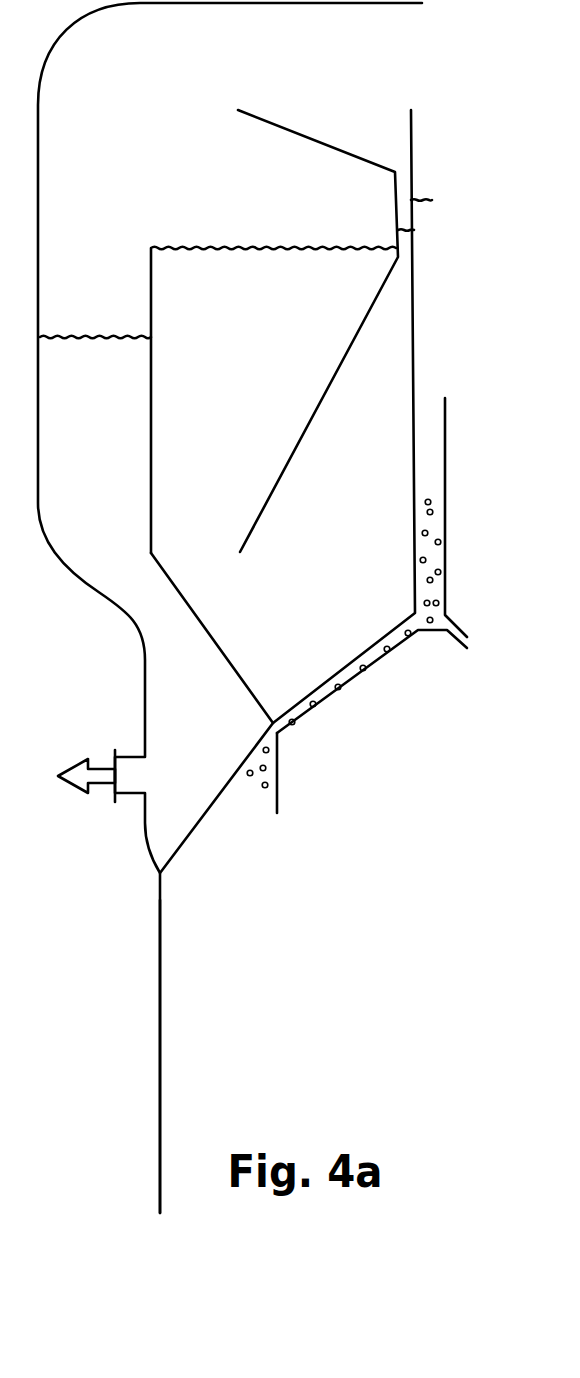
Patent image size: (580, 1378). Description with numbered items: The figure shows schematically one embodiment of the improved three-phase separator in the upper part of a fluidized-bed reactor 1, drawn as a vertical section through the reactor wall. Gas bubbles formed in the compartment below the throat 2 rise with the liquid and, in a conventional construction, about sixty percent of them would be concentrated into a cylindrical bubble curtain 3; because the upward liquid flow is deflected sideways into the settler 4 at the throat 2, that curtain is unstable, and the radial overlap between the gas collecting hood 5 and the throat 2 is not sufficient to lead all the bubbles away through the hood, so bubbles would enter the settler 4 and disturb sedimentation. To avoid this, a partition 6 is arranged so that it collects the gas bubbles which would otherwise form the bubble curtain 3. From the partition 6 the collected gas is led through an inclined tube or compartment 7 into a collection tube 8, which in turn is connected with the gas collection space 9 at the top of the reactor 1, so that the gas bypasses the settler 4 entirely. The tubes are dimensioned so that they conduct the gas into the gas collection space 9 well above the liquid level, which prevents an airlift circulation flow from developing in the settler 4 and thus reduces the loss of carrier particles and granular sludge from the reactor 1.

The fluidized-bed reactor 1 is at (160, 1070).
The throat 2 is at (247, 757).
The bubble curtain 3 is at (298, 722).
The settler 4 is at (273, 400).
The gas collecting hood 5 is at (293, 455).
The partition 6 is at (277, 780).
The tube 7 is at (380, 662).
The collection tube 8 is at (445, 437).
The gas collection space 9 is at (230, 438).